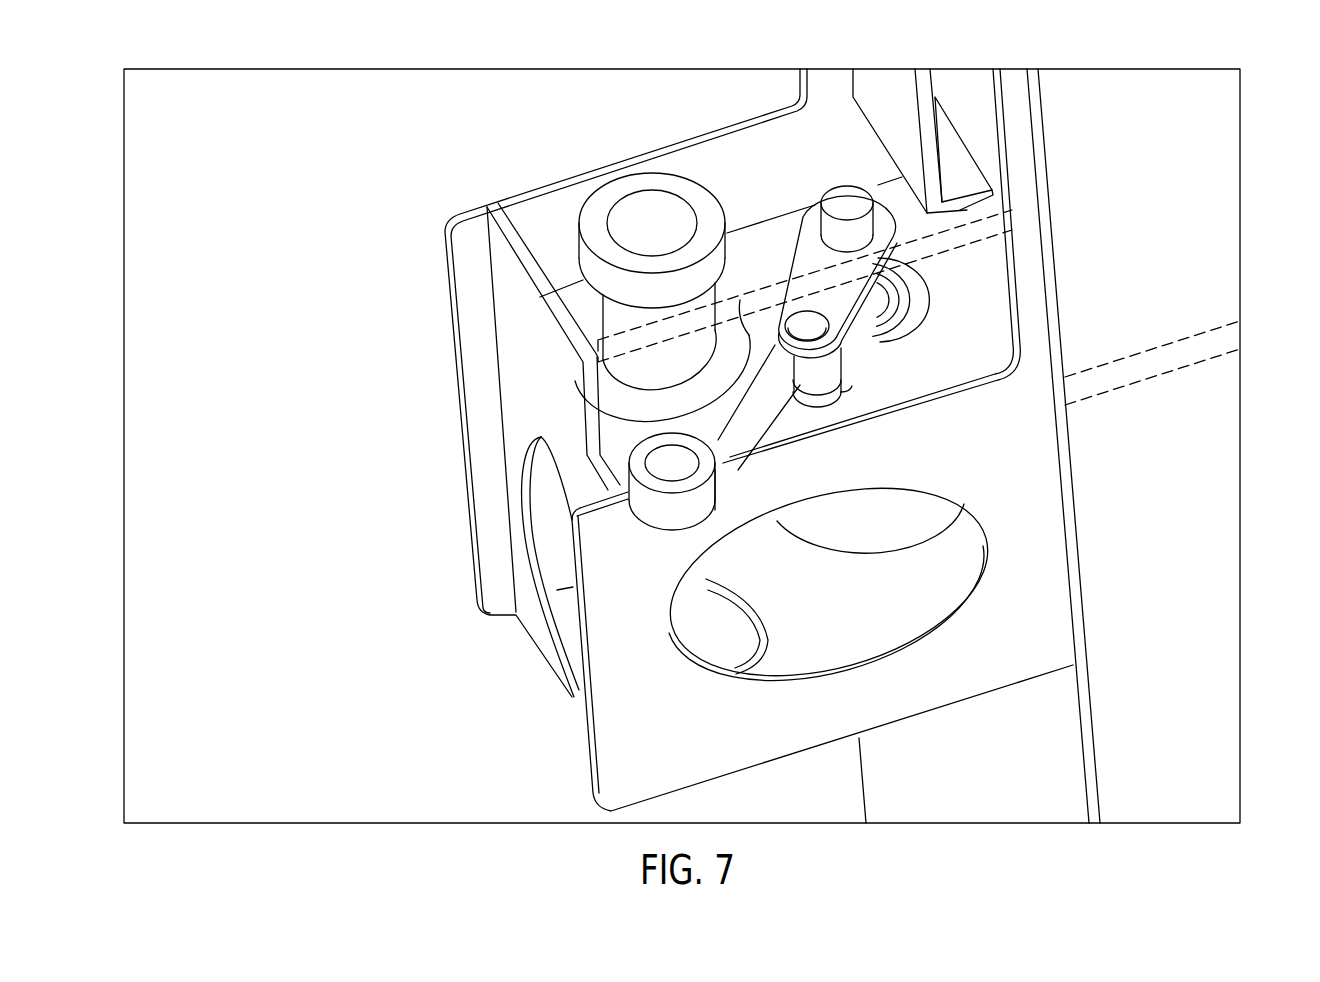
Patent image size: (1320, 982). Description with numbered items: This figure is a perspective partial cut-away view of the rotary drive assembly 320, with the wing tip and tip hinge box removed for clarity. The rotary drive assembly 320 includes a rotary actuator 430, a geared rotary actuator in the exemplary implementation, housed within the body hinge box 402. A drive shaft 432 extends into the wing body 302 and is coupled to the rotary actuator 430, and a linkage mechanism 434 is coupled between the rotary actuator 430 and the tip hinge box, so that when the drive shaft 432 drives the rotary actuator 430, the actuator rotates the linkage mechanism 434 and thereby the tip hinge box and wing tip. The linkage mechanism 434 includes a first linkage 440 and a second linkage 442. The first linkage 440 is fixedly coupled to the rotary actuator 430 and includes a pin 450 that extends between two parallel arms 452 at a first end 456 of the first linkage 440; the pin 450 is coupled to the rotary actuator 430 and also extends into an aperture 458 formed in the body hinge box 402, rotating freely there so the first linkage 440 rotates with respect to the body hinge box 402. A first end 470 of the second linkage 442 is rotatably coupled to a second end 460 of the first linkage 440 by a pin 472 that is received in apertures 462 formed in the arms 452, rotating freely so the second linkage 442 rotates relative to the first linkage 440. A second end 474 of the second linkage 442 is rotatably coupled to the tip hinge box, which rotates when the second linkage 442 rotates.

The wing body 302 is at (1205, 202).
The rotary drive assembly 320 is at (893, 60).
The body hinge box 402 is at (510, 330).
The rotary actuator 430 is at (910, 510).
The drive shaft 432 is at (1114, 373).
The linkage mechanism 434 is at (773, 275).
The first linkage 440 is at (867, 326).
The second linkage 442 is at (747, 437).
The pin 450 is at (845, 200).
The parallel arms 452 is at (852, 292).
The first end 456 is at (900, 232).
The aperture 458 is at (895, 333).
The second end 460 is at (849, 400).
The apertures 462 is at (771, 341).
The first end 470 is at (817, 409).
The pin 472 is at (830, 370).
The second end 474 is at (660, 536).